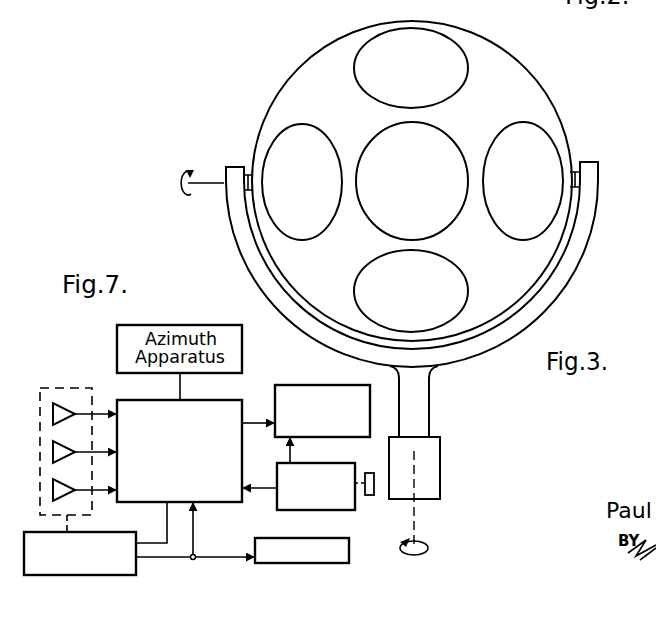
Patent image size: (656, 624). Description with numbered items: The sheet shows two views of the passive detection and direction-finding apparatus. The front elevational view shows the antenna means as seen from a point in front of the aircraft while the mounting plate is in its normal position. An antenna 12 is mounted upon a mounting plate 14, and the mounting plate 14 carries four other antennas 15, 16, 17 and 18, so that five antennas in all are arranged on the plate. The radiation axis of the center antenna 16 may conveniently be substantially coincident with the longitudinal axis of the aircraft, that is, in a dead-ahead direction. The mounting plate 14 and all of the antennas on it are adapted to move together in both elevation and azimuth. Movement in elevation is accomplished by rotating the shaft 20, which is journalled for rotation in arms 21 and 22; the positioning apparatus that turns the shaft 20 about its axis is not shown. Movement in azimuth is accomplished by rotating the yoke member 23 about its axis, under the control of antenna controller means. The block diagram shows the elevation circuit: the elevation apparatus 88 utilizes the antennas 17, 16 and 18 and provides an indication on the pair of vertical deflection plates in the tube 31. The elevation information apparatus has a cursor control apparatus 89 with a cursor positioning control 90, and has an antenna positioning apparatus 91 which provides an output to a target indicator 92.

In FIG. 3, the antenna 12 is at (310, 125).
In FIG. 3, the mounting plate 14 is at (532, 72).
In FIG. 3, the antenna 15 is at (542, 123).
In FIG. 3, the center antenna 16 is at (444, 133).
In FIG. 7, the center antenna 16 is at (64, 442).
In FIG. 3, the antenna 17 is at (421, 29).
In FIG. 7, the antenna 17 is at (63, 403).
In FIG. 3, the antenna 18 is at (468, 291).
In FIG. 7, the antenna 18 is at (64, 480).
In FIG. 3, the shaft 20 is at (577, 170).
In FIG. 3, the arm 21 is at (234, 167).
In FIG. 3, the arm 22 is at (597, 170).
In FIG. 3, the yoke member 23 is at (429, 410).
In FIG. 7, the tube 31 is at (298, 385).
In FIG. 7, the elevation apparatus 88 is at (242, 386).
In FIG. 7, the cursor control apparatus 89 is at (322, 510).
In FIG. 7, the cursor positioning control 90 is at (378, 463).
In FIG. 7, the antenna positioning apparatus 91 is at (84, 575).
In FIG. 7, the target indicator 92 is at (283, 538).